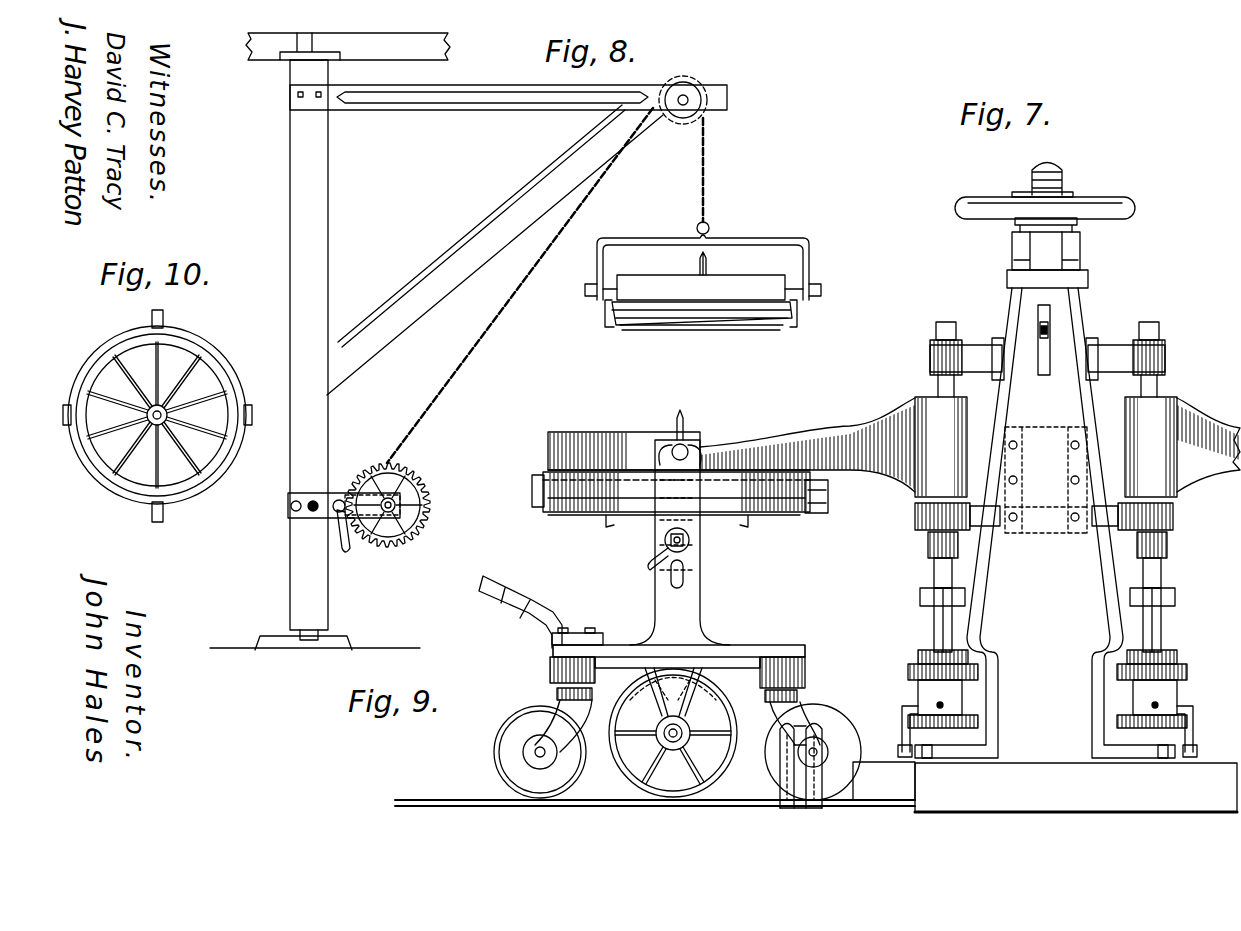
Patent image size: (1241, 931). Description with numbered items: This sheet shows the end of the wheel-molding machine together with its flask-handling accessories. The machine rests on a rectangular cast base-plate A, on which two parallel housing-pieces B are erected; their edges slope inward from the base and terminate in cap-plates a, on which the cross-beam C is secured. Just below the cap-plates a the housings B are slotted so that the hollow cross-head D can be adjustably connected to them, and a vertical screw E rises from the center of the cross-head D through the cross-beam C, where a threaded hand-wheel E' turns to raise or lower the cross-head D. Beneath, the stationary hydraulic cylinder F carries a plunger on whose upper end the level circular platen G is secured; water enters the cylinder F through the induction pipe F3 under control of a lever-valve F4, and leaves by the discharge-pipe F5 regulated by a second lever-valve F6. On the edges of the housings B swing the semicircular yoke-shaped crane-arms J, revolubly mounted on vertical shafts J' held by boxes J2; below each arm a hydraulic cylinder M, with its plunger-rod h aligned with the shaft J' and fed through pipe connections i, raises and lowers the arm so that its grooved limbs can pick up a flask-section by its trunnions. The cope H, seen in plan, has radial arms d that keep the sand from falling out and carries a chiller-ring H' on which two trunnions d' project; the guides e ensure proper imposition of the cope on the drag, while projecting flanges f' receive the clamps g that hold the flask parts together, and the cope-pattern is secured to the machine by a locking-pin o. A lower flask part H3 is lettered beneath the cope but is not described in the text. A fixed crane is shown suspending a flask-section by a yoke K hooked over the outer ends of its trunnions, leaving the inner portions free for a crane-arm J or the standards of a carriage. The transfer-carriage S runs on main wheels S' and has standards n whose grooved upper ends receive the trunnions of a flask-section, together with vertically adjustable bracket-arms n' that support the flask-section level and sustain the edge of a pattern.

In FIG. 7, the base-plate A is at (1076, 787).
In FIG. 7, the housing-pieces B is at (1045, 523).
In FIG. 7, the cross-beam C is at (1080, 255).
In FIG. 7, the cross-head D is at (1050, 340).
In FIG. 7, the vertical screw E is at (1055, 180).
In FIG. 7, the hand-wheel E' is at (1061, 208).
In FIG. 7, the hydraulic cylinder F is at (1067, 543).
In FIG. 9, the water-induction pipe F3 is at (853, 792).
In FIG. 9, the lever-valve F4 is at (810, 728).
In FIG. 9, the discharge-pipe F5 is at (782, 810).
In FIG. 9, the lever-valve F6 is at (800, 726).
In FIG. 7, the platen G is at (1173, 515).
In FIG. 8, the cope H is at (702, 324).
In FIG. 9, the cope H is at (665, 456).
In FIG. 10, the cope H is at (157, 415).
In FIG. 8, the chiller-ring H' is at (701, 275).
In FIG. 9, the chiller-ring H' is at (676, 456).
In FIG. 10, the chiller-ring H' is at (174, 415).
In FIG. 8, the roller bar H3 is at (695, 330).
In FIG. 9, the roller bar H3 is at (580, 518).
In FIG. 7, the crane-arms J is at (970, 446).
In FIG. 7, the vertical shafts J' is at (1042, 452).
In FIG. 7, the boxes J2 is at (1183, 542).
In FIG. 8, the yoke K is at (752, 240).
In FIG. 7, the cylinder M is at (1200, 685).
In FIG. 9, the transfer-carriage S is at (677, 684).
In FIG. 9, the main wheels S' is at (677, 734).
In FIG. 7, the cap-plates a is at (1088, 281).
In FIG. 10, the radial arms d is at (157, 415).
In FIG. 8, the trunnions d' is at (703, 290).
In FIG. 9, the trunnions d' is at (712, 435).
In FIG. 10, the trunnions d' is at (174, 417).
In FIG. 9, the guides e is at (600, 432).
In FIG. 10, the guides e is at (262, 422).
In FIG. 9, the projecting flanges f' is at (839, 495).
In FIG. 8, the clamps g is at (812, 325).
In FIG. 9, the clamps g is at (842, 515).
In FIG. 7, the plunger-rod h is at (1173, 628).
In FIG. 7, the pipe connections i is at (1210, 725).
In FIG. 9, the standards n is at (680, 542).
In FIG. 9, the bracket-arms n' is at (702, 549).
In FIG. 8, the locking-pin o is at (706, 262).
In FIG. 9, the locking-pin o is at (684, 425).